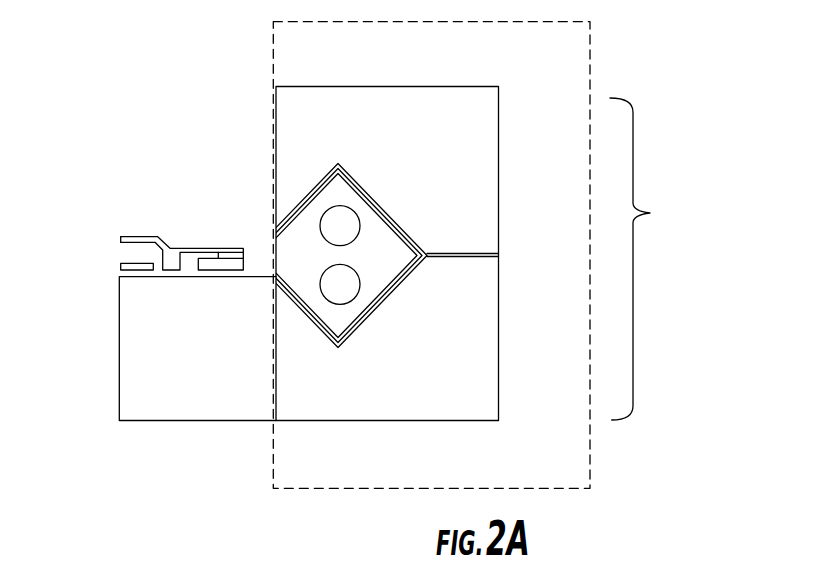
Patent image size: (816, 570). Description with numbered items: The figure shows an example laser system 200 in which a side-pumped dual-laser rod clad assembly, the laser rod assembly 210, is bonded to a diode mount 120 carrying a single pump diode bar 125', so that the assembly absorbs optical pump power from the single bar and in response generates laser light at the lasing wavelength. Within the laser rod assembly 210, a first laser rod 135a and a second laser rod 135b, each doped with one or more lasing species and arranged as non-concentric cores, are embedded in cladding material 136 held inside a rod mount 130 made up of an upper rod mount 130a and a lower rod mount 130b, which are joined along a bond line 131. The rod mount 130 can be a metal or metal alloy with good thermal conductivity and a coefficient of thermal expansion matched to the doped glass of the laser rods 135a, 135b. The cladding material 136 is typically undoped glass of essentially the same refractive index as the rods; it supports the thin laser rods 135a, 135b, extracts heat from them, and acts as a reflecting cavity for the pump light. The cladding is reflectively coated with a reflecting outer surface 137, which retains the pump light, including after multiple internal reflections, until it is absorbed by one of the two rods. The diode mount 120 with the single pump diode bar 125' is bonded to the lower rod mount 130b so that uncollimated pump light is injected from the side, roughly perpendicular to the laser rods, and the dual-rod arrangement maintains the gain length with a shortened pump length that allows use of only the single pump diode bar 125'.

The laser system 200 is at (628, 72).
The diode mount 120 is at (147, 344).
The single pump diode bar 125' is at (141, 199).
The rod mount 130 is at (481, 254).
The upper rod mount 130a is at (468, 189).
The lower rod mount 130b is at (468, 382).
The bond line 131 is at (463, 257).
The first laser rod 135a is at (337, 218).
The second laser rod 135b is at (337, 288).
The cladding material 136 is at (302, 234).
The reflecting outer surface 137 is at (390, 215).
The laser rod assembly 210 is at (358, 490).